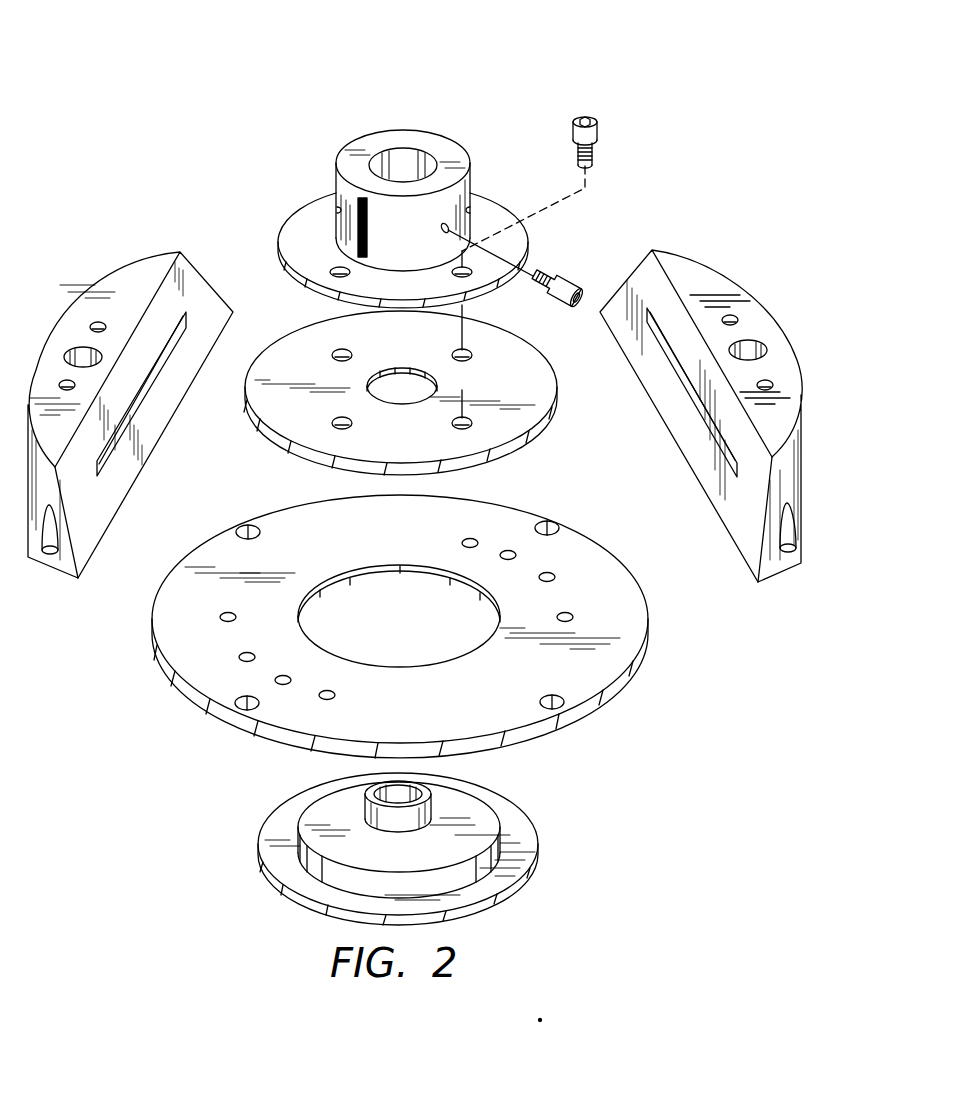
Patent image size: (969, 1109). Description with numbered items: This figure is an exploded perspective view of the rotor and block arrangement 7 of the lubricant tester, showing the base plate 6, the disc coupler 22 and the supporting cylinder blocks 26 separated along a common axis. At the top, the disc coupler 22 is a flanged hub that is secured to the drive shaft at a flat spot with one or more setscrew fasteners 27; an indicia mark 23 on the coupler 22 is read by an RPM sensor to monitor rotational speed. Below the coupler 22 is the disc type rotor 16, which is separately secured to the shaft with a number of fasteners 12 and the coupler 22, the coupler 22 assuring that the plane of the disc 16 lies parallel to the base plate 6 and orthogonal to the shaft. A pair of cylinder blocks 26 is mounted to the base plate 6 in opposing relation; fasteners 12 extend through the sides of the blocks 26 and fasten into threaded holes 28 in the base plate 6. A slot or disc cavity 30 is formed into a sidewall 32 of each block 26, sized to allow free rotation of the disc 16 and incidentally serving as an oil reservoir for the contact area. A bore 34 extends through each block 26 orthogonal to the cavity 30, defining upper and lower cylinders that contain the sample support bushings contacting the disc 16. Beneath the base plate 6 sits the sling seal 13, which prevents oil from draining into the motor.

The base plate 6 is at (649, 629).
The arrangement 7 is at (533, 59).
The fasteners 12 is at (598, 132).
The sling seal 13 is at (264, 822).
The disc type rotor 16 is at (558, 389).
The disc coupler 22 is at (279, 245).
The indicia mark 23 is at (360, 205).
The cylinder blocks 26 is at (54, 566).
The setscrew fasteners 27 is at (561, 290).
The threaded holes 28 is at (568, 612).
The disc cavity 30 is at (188, 329).
The sidewall 32 is at (122, 484).
The bore 34 is at (82, 350).